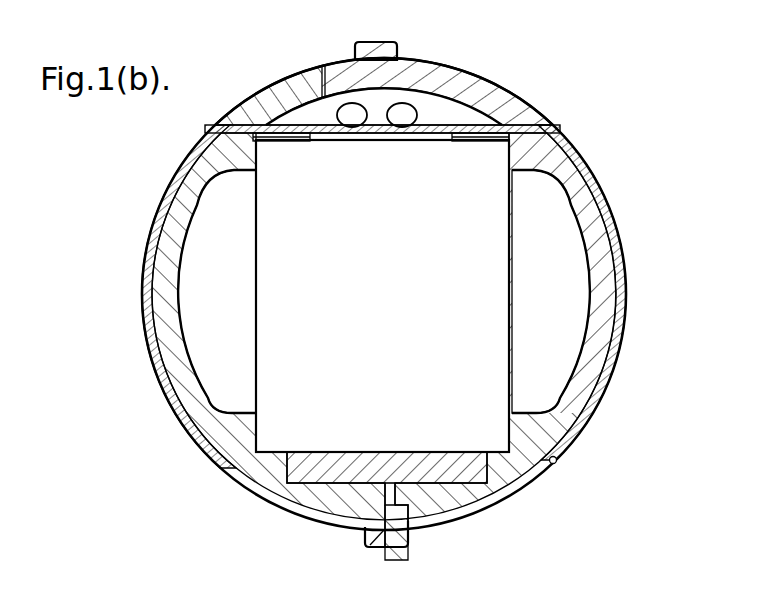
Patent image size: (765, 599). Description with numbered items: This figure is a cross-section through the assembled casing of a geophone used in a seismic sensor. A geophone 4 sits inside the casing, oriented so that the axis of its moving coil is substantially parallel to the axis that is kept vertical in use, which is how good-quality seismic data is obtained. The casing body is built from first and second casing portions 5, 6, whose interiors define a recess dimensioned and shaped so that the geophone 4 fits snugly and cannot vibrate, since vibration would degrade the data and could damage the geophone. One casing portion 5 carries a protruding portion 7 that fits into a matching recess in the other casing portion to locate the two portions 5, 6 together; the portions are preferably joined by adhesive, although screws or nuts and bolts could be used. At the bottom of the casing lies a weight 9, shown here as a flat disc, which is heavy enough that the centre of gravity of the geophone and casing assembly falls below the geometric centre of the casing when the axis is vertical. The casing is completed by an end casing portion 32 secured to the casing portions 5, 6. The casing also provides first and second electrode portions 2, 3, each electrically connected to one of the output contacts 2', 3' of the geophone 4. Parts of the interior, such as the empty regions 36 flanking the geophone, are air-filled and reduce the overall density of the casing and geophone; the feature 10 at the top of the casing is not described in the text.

The first electrode portion 2 is at (401, 294).
The output contact 2' is at (436, 81).
The second electrode portion 3 is at (361, 296).
The output contact 3' is at (384, 84).
The geophone 4 is at (493, 415).
The first casing portion 5 is at (270, 493).
The second casing portion 6 is at (457, 508).
The protruding portion 7 is at (410, 523).
The weight 9 is at (477, 467).
The flange projection 10 is at (396, 46).
The end casing portion 32 is at (503, 92).
The cavity 36 is at (193, 222).